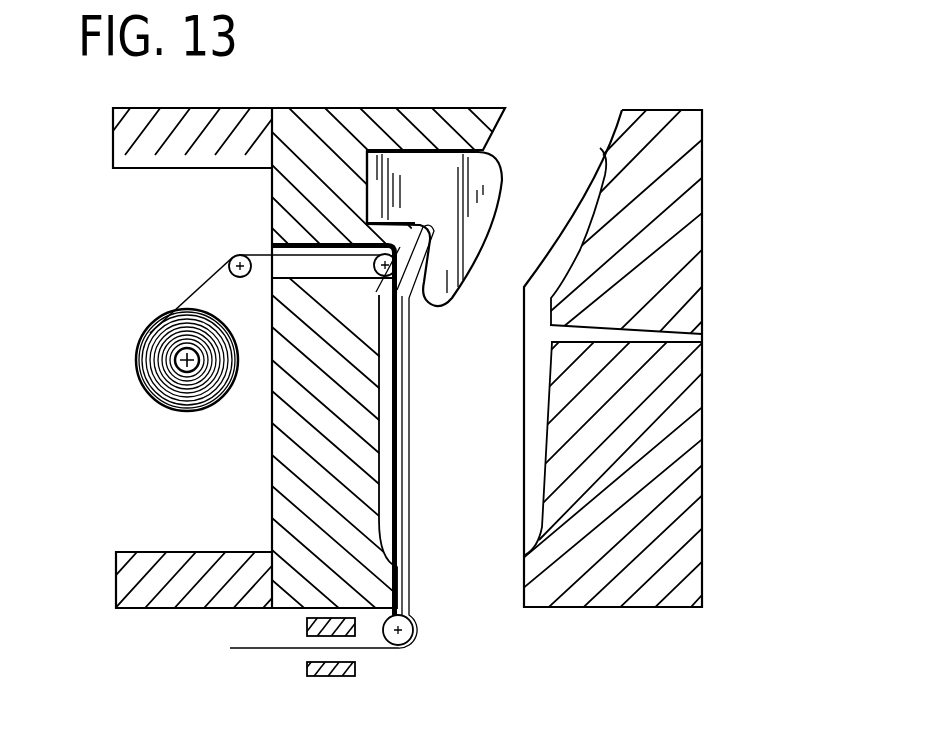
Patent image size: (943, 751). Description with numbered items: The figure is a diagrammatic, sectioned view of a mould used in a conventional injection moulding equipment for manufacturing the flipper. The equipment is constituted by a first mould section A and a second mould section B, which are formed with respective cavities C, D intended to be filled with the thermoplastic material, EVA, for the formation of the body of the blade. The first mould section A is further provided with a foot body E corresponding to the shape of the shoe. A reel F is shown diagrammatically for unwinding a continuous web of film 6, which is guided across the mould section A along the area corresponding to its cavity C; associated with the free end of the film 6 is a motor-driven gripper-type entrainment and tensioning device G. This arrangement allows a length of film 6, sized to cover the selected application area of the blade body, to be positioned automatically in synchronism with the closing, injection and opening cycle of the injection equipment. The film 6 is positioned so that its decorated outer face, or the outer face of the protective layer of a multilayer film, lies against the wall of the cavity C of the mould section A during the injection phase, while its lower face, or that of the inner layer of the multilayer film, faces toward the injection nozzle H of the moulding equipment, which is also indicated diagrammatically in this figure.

The first mould section A is at (322, 128).
The foot body E is at (485, 176).
The cavity C is at (379, 447).
The film 6 is at (404, 380).
The reel F is at (152, 330).
The gripper-type entrainment and tensioning device G is at (355, 666).
The second mould section B is at (686, 386).
The cavity D is at (545, 452).
The injection nozzle H is at (634, 327).